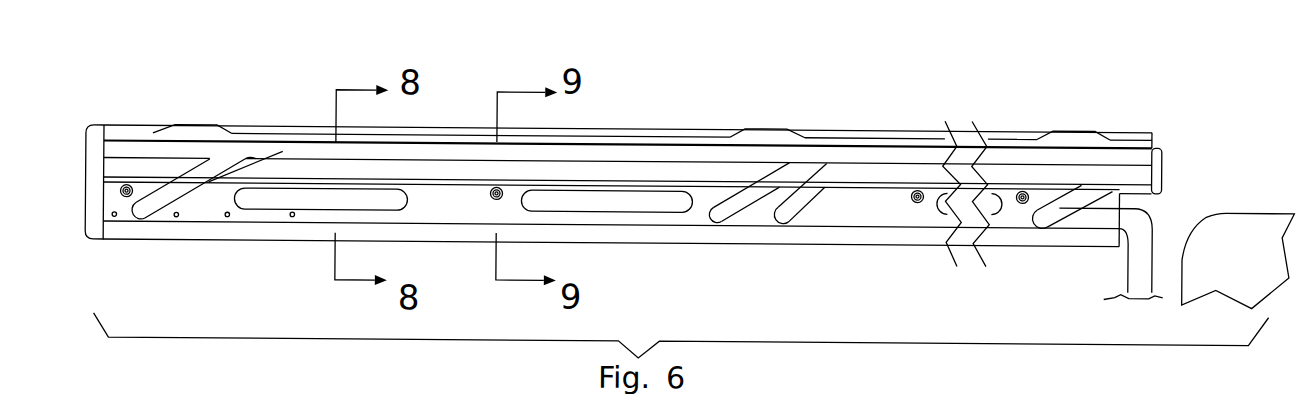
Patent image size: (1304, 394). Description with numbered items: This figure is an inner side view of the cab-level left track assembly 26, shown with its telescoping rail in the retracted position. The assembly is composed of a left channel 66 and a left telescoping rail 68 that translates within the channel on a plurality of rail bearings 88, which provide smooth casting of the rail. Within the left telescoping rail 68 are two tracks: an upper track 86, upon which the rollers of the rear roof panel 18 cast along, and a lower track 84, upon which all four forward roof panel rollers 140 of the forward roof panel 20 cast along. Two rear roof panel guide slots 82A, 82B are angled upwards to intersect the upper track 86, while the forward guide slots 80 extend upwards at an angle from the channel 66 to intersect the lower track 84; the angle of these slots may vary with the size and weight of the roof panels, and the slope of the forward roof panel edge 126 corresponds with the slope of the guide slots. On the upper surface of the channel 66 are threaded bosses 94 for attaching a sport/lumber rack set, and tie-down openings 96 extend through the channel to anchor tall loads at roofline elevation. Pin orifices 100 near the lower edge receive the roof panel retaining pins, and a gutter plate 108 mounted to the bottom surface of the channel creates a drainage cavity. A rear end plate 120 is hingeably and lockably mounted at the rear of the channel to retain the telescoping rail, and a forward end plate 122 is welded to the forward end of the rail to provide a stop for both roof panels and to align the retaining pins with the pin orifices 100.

The left track assembly 26 is at (1150, 112).
The left channel 66 is at (605, 121).
The left telescoping rail 68 is at (685, 155).
The lower track 84 is at (887, 177).
The gutter plate 108 is at (612, 229).
The threaded bosses 94 is at (196, 122).
The rear end plate 120 is at (87, 127).
The forward end plate 122 is at (1163, 169).
The rail bearings 88 is at (118, 205).
The tie-down openings 96 is at (337, 197).
The pin orifices 100 is at (232, 218).
The rear guide slot 82A is at (153, 211).
The rear guide slot 82B is at (724, 212).
The forward guide slot 80 is at (796, 212).
The upper track 86 is at (283, 150).
The rear roof panel 18 is at (307, 393).
The forward roof panel edge 126 is at (810, 390).
The forward roof panel rollers 140 is at (840, 390).
The forward roof panel 20 is at (1027, 388).